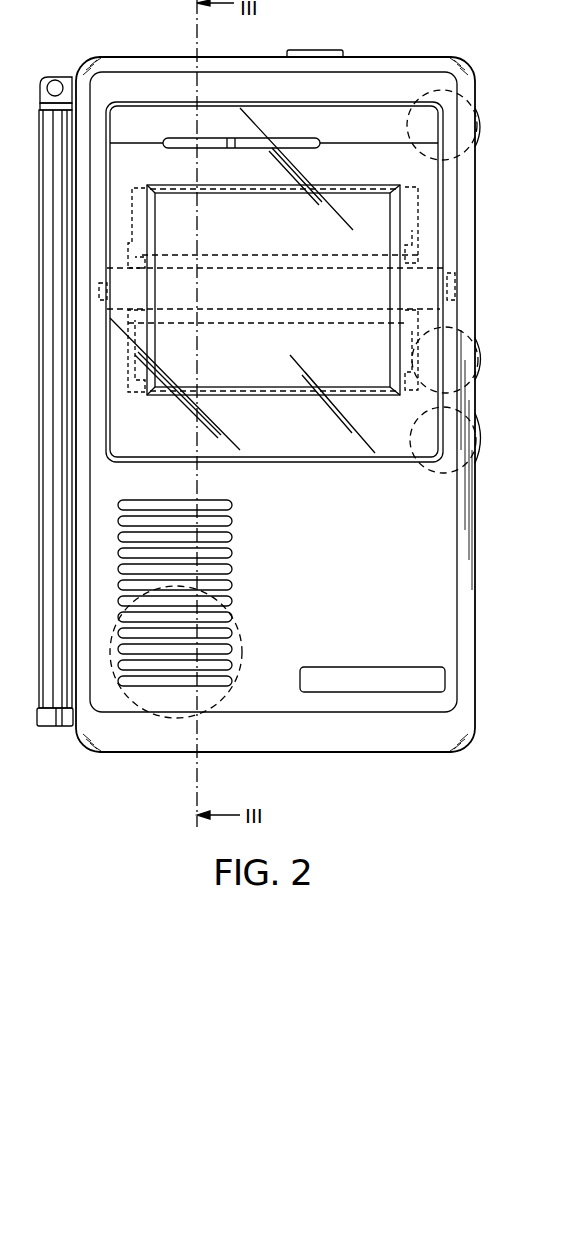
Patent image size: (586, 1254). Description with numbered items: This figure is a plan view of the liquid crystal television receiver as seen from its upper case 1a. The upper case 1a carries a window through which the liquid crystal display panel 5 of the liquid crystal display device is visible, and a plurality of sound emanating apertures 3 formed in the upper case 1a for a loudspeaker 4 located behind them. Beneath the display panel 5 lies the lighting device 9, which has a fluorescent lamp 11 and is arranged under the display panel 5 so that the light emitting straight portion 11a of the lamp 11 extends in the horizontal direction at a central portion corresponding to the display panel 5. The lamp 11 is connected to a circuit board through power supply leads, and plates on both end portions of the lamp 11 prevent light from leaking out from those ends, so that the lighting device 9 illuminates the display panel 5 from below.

The upper case 1a is at (445, 622).
The sound emanating apertures 3 is at (227, 585).
The loudspeaker 4 is at (130, 700).
The liquid crystal display panel 5 is at (172, 210).
The lighting device 9 is at (419, 206).
The fluorescent lamp 11 is at (423, 290).
The light emitting straight portion 11a is at (245, 290).